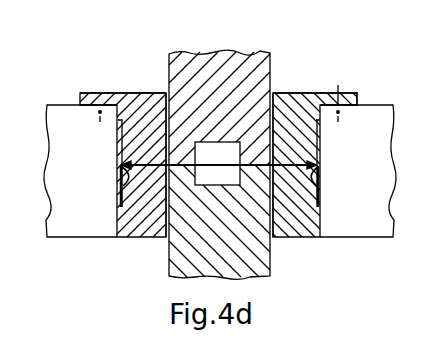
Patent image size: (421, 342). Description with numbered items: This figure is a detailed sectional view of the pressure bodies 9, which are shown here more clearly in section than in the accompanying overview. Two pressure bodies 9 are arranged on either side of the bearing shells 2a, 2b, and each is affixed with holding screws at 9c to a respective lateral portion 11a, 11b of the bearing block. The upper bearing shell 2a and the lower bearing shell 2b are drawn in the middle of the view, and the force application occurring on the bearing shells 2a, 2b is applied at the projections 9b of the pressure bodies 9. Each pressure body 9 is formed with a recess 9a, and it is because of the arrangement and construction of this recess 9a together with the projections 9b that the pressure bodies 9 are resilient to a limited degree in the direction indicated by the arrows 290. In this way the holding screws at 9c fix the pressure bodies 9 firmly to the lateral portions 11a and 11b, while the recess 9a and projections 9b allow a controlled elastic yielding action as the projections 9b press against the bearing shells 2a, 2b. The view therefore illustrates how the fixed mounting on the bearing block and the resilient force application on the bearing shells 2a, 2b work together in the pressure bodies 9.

The bearing shell 2a is at (263, 62).
The bearing shell 2b is at (255, 255).
The pressure body 9 is at (141, 94).
The recess 9a is at (121, 146).
The projection 9b is at (173, 140).
The holding screw location 9c is at (100, 93).
The arrows 290 is at (128, 185).
The lateral portion of bearing block 11a is at (80, 225).
The lateral portion of bearing block 11b is at (357, 225).